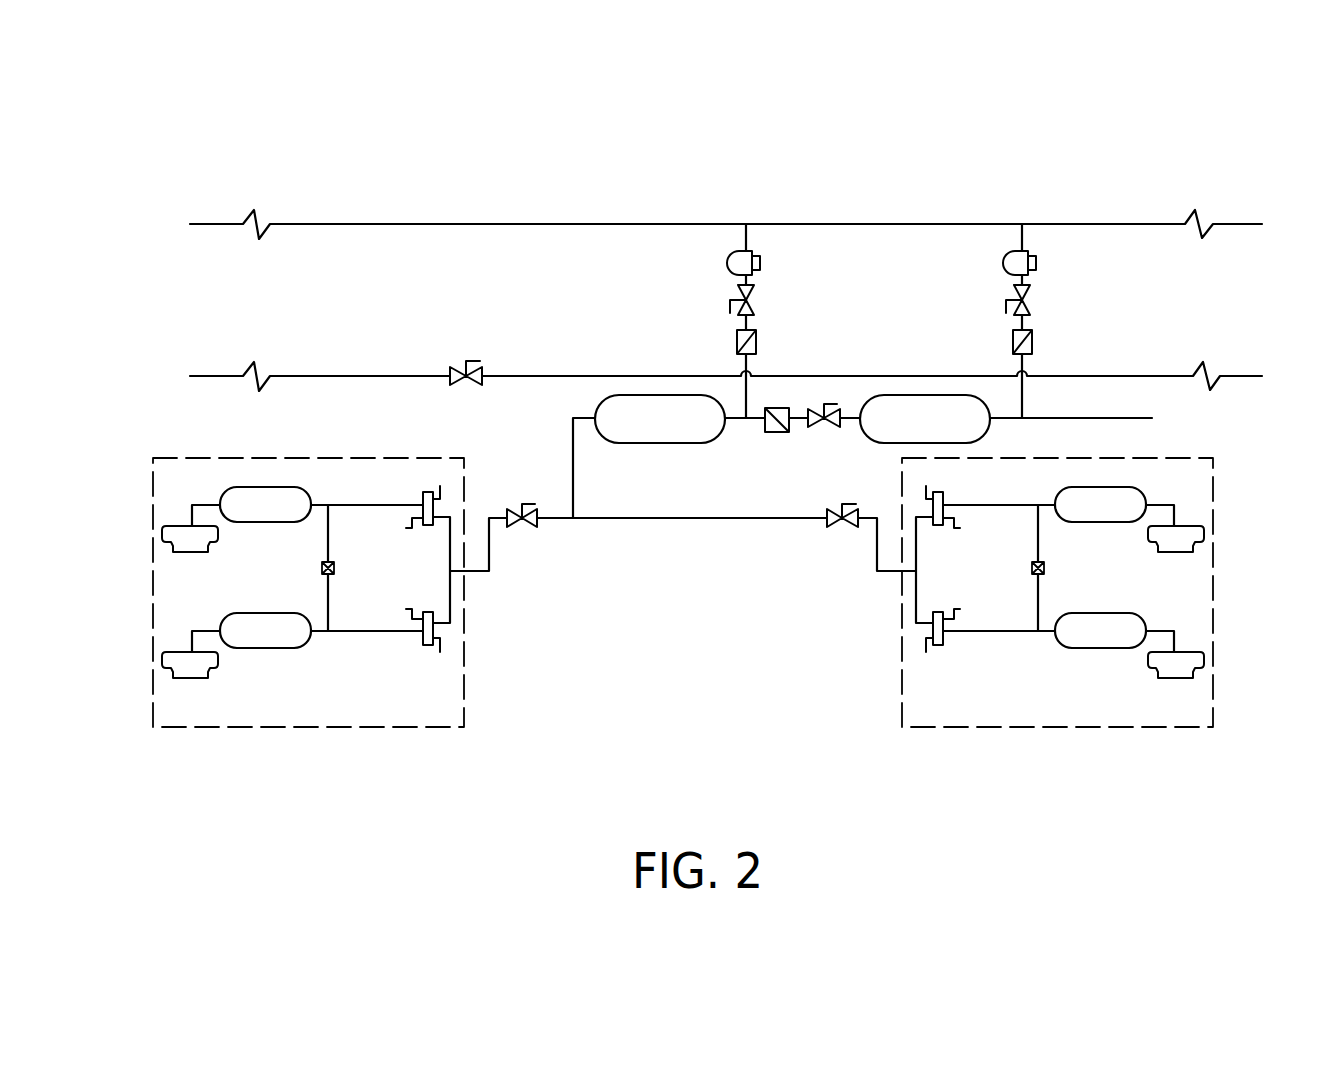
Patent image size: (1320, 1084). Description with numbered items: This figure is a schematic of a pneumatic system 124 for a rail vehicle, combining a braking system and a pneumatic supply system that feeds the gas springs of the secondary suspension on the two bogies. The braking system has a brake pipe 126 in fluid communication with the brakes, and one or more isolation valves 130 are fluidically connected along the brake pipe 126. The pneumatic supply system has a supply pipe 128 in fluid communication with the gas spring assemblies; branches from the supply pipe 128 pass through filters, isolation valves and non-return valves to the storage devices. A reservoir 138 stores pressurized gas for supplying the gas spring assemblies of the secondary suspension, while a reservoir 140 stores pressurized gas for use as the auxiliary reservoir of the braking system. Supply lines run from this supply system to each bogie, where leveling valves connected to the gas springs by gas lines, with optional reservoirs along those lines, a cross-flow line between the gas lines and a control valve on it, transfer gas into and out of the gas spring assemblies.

The pneumatic system 124 is at (960, 167).
The brake pipe 126 is at (343, 376).
The supply pipe 128 is at (360, 224).
The isolation valve 130 is at (466, 366).
The reservoir 138 is at (677, 429).
The reservoir 140 is at (943, 429).